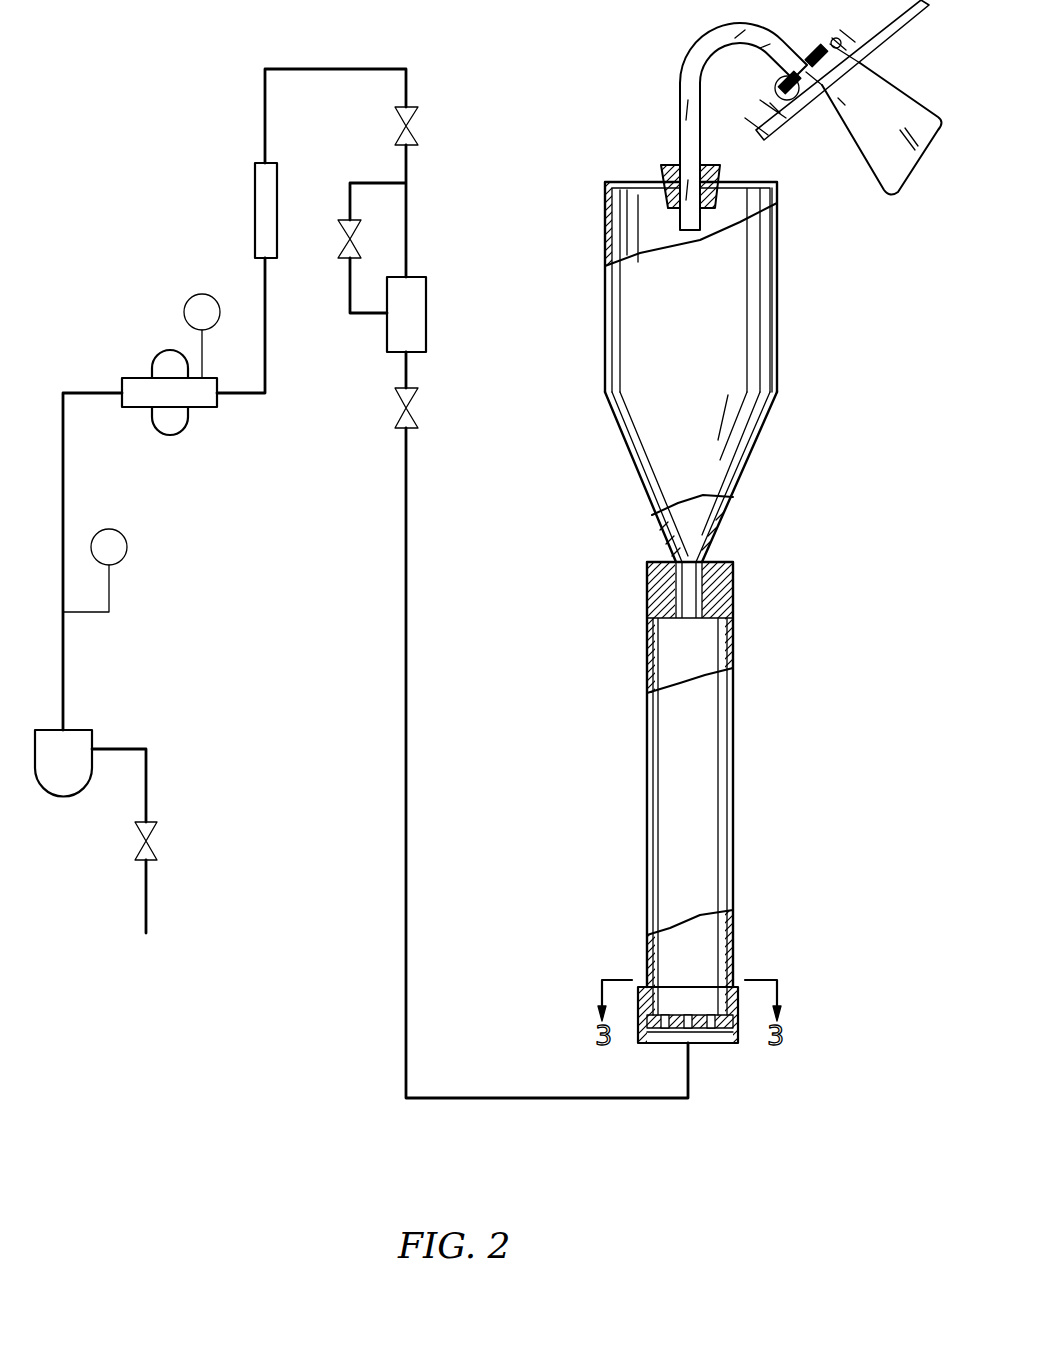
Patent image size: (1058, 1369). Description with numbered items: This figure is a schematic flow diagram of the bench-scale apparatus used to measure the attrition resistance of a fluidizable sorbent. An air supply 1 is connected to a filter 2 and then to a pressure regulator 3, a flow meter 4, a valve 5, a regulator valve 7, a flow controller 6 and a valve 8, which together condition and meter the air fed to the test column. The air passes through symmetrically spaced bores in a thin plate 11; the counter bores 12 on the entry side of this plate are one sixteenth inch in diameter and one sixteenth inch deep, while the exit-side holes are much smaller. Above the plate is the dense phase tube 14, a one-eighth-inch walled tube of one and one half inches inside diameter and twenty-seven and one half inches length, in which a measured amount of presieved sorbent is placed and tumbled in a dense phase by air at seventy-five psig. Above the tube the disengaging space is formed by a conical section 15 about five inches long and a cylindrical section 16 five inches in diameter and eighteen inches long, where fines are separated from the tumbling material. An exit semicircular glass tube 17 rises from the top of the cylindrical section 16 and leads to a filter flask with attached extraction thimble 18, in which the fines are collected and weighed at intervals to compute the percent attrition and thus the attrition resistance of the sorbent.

The air supply 1 is at (148, 882).
The filter 2 is at (73, 783).
The pressure regulator 3 is at (177, 423).
The flow meter 4 is at (255, 223).
The valve 5 is at (418, 133).
The flow controller 6 is at (425, 297).
The regulator valve 7 is at (347, 230).
The valve 8 is at (415, 413).
The plate 11 is at (680, 1014).
The counter bores 12 is at (665, 1030).
The dense phase tube 14 is at (720, 772).
The conical section 15 is at (728, 518).
The cylindrical section 16 is at (777, 287).
The glass tube 17 is at (683, 73).
The filter flask with extraction thimble 18 is at (885, 185).